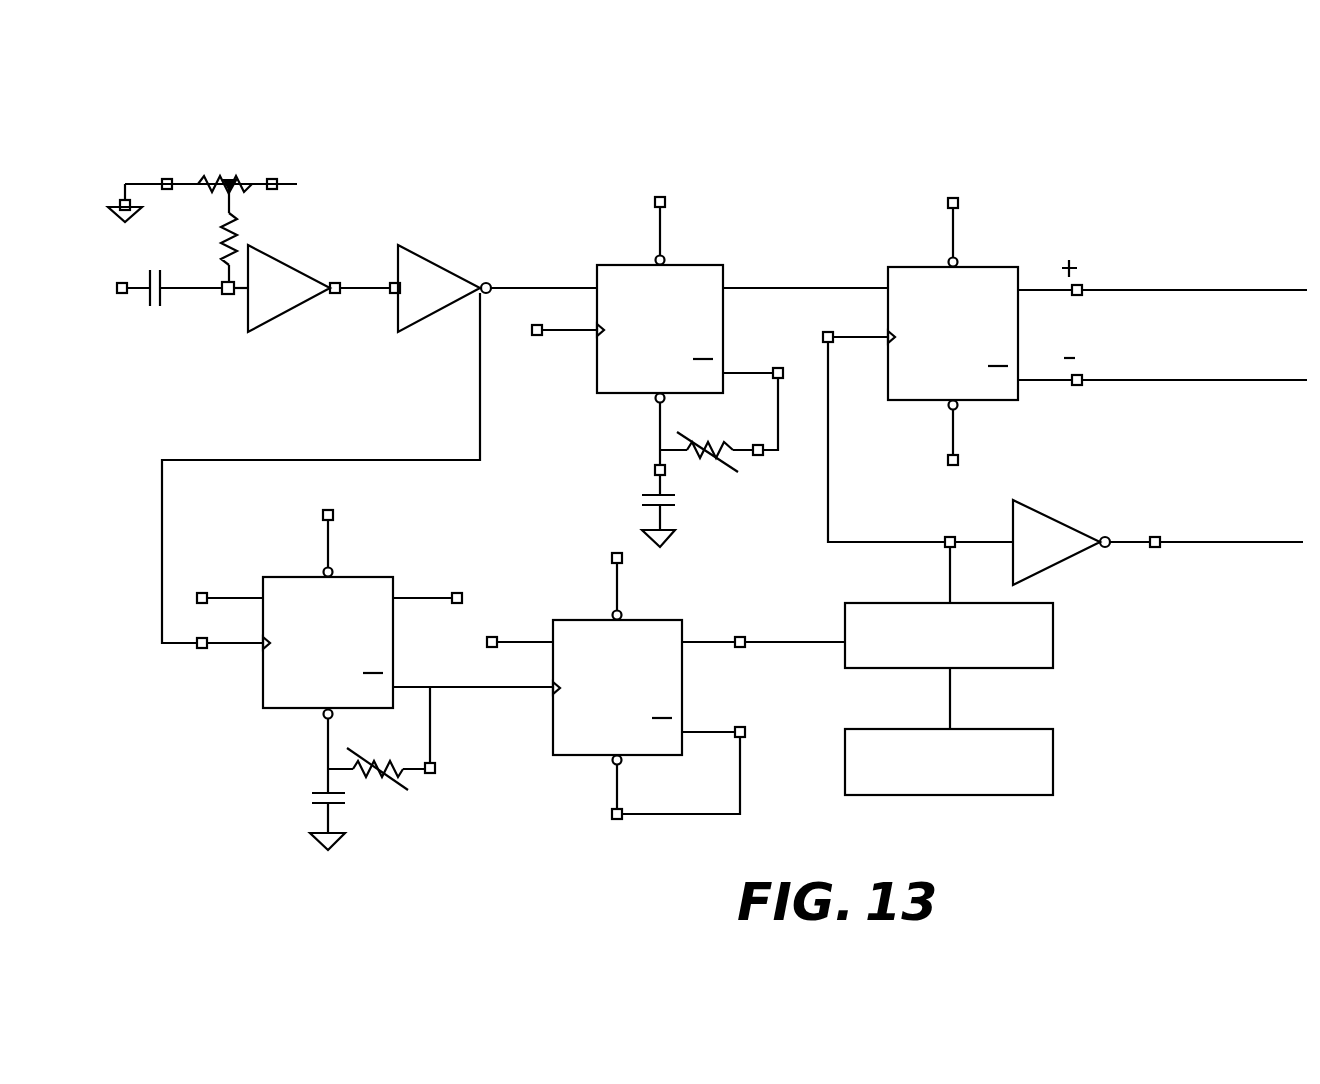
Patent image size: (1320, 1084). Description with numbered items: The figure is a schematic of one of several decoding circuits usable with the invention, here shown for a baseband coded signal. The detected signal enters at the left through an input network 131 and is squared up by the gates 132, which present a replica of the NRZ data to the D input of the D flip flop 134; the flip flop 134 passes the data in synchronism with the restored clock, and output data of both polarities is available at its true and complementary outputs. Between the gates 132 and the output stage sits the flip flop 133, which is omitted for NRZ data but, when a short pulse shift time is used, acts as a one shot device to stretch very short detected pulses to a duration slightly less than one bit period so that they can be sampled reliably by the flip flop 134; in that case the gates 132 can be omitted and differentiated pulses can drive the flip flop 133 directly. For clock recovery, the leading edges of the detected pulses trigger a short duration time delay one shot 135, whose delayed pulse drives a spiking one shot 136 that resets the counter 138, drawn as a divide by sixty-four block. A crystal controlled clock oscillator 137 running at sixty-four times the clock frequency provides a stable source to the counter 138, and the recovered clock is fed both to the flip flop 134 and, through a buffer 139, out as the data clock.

The input potentiometer network 131 is at (208, 173).
The gates 132 is at (437, 258).
The flip flop 133 is at (617, 263).
The D flip flop 134 is at (907, 265).
The time delay one shot 135 is at (263, 708).
The spiking one shot 136 is at (578, 755).
The 64x oscillator 137 is at (1057, 760).
The counter 138 is at (1057, 648).
The data clock buffer 139 is at (1070, 520).